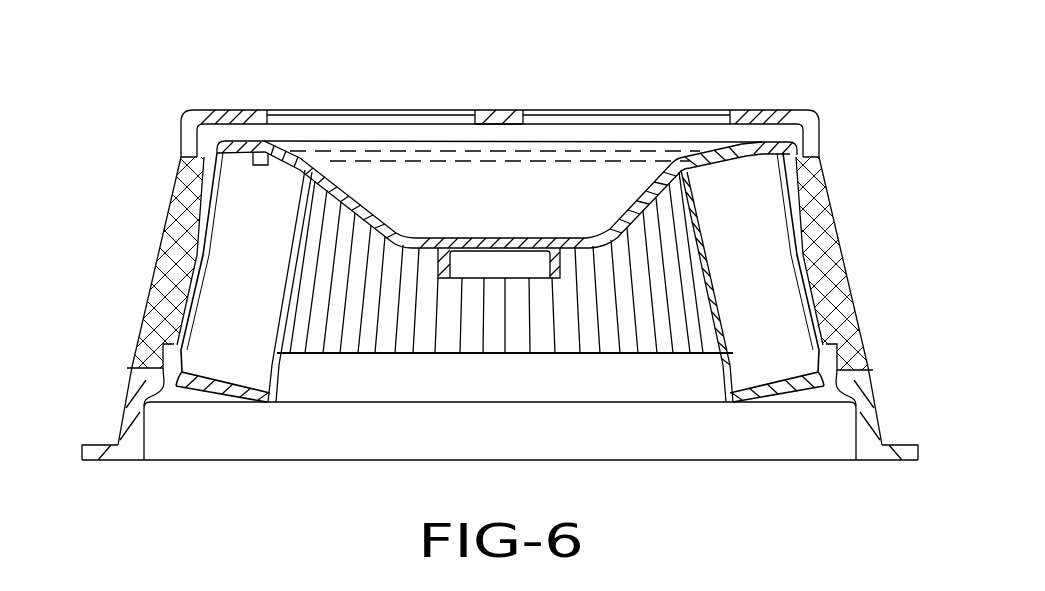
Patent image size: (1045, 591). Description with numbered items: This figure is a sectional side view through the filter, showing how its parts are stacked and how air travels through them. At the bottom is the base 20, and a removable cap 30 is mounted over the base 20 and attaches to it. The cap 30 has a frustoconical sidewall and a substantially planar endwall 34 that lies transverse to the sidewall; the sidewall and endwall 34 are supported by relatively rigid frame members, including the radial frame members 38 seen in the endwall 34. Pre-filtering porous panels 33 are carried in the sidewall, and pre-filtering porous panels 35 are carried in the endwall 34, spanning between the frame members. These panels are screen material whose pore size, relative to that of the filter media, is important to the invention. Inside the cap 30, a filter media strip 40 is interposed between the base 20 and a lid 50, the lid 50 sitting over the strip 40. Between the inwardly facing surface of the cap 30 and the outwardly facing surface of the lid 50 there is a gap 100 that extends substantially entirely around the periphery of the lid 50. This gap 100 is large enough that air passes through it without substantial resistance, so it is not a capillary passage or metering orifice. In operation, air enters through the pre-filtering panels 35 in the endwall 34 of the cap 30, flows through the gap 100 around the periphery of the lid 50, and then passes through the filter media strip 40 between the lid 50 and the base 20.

The base 20 is at (650, 466).
The cap 30 is at (179, 117).
The pre-filtering porous panels 33 is at (167, 245).
The endwall 34 is at (228, 110).
The pre-filtering porous panels 35 is at (373, 113).
The radial frame members 38 is at (488, 112).
The filter media strip 40 is at (233, 277).
The lid 50 is at (689, 152).
The gap 100 is at (764, 126).